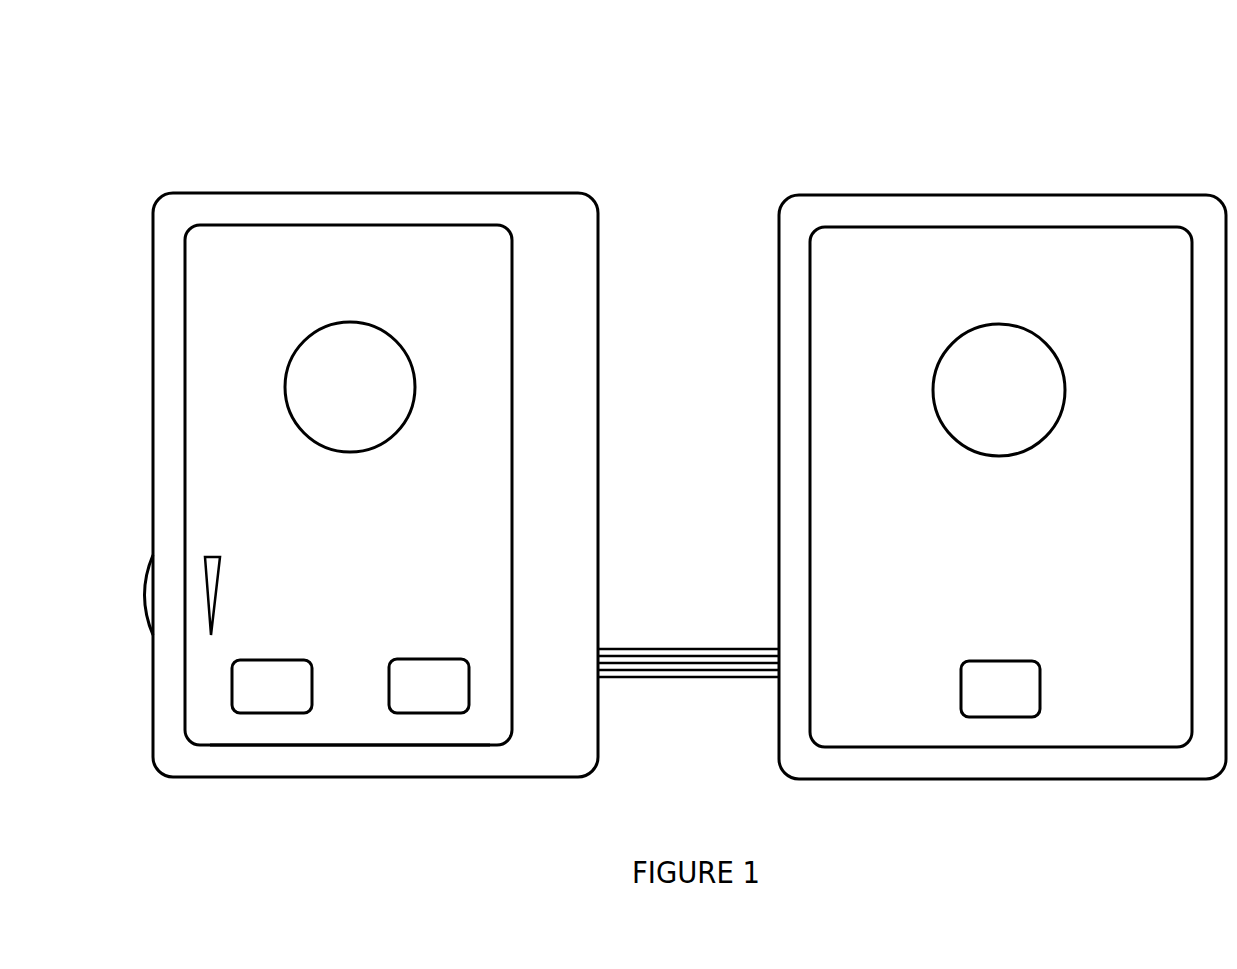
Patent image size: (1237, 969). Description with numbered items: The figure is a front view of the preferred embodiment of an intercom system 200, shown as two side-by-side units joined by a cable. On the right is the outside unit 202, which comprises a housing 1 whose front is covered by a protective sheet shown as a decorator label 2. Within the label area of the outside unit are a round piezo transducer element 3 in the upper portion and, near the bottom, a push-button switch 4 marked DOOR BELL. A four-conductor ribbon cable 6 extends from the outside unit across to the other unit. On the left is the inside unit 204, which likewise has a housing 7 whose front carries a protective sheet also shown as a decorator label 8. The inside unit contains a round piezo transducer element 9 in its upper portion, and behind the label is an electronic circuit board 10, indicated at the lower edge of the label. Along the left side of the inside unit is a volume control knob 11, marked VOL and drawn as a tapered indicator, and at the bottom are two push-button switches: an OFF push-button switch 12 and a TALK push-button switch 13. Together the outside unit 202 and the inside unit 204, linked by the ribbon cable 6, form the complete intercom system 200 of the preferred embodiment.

The intercom system 200 is at (687, 106).
The outside unit 202 is at (770, 188).
The inside unit 204 is at (606, 188).
The housing 1 is at (921, 194).
The decorator label 2 is at (1060, 228).
The piezo transducer element 3 is at (948, 323).
The DOOR BELL push-button switch 4 is at (1000, 661).
The 4-conductor ribbon cable 6 is at (637, 648).
The housing 7 is at (408, 193).
The decorator label 8 is at (242, 225).
The piezo transducer element 9 is at (283, 334).
The electronic circuit board 10 is at (260, 745).
The volume control knob 11 is at (223, 582).
The OFF push-button switch 12 is at (312, 673).
The TALK push-button switch 13 is at (387, 675).